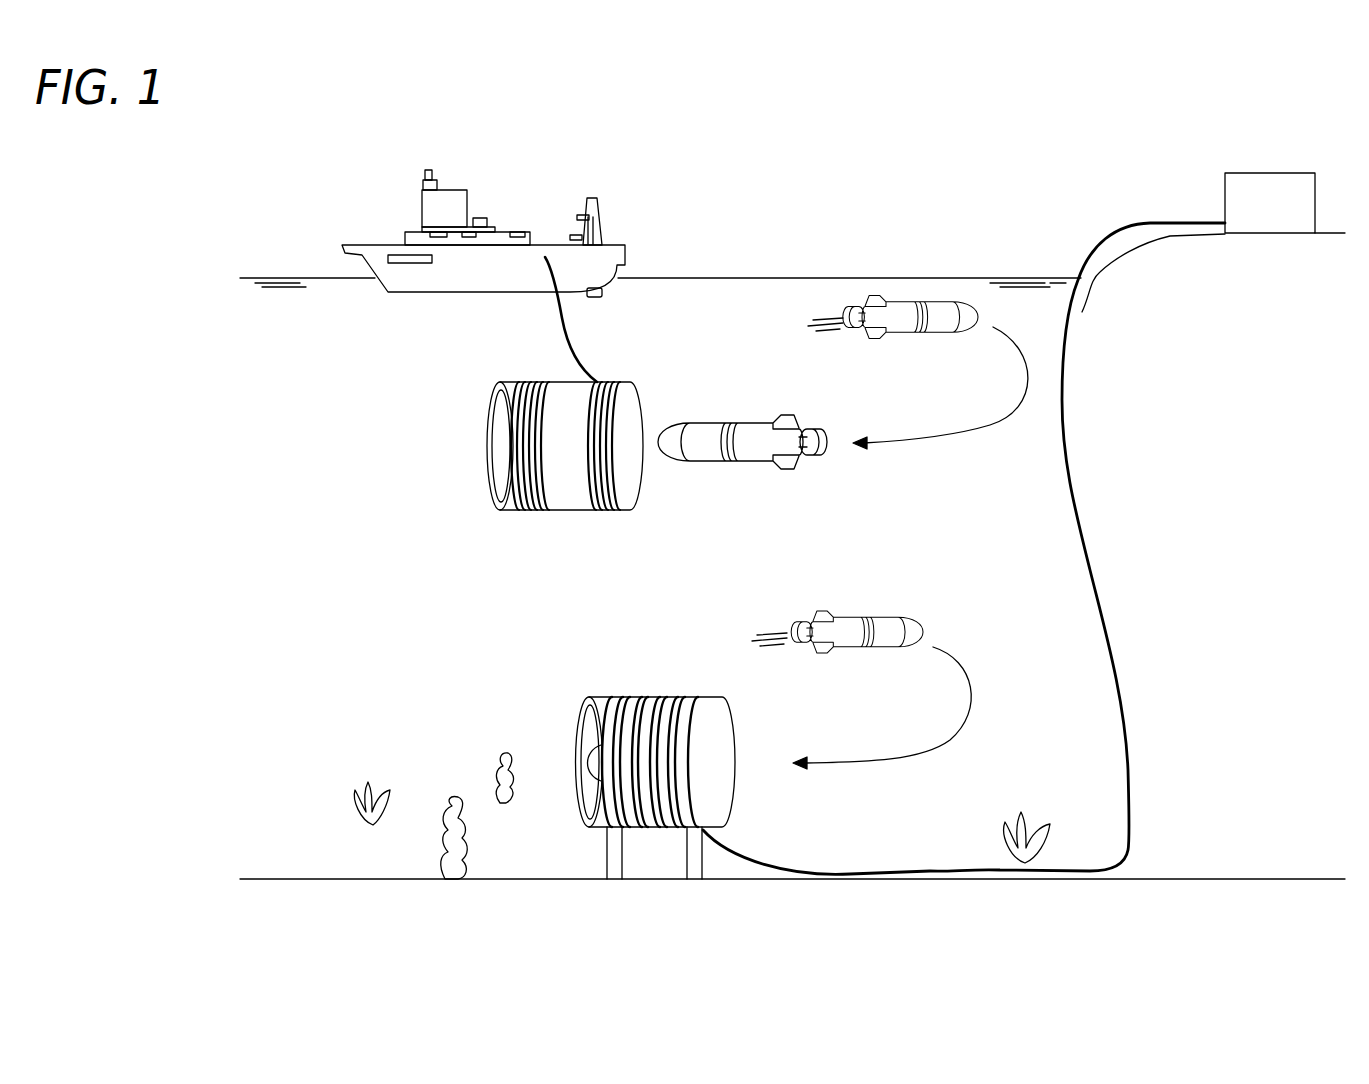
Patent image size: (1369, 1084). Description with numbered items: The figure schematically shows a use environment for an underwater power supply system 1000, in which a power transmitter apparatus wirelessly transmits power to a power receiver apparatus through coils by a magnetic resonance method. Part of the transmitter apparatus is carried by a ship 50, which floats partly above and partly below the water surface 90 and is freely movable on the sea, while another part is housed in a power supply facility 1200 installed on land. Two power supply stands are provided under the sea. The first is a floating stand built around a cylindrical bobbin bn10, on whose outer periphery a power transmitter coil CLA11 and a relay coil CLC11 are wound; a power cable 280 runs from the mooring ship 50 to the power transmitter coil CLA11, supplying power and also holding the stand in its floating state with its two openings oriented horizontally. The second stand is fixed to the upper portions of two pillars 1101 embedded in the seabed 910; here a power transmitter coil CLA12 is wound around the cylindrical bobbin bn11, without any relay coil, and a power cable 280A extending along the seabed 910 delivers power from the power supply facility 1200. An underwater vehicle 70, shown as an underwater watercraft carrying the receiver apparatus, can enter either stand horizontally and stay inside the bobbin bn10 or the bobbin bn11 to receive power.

The underwater power supply system 1000 is at (908, 185).
The ship 50 is at (615, 238).
The water surface 90 is at (782, 277).
The power cable 280 is at (568, 330).
The bobbin bn10 is at (548, 497).
The relay coil CLC11 is at (513, 512).
The power transmitter coil CLA11 is at (613, 510).
The underwater vehicle 70 is at (698, 423).
The bobbin bn11 is at (698, 746).
The power transmitter coil CLA12 is at (625, 697).
The pillars 1101 is at (683, 862).
The seabed 910 is at (500, 873).
The power cable 280A is at (937, 871).
The power supply facility 1200 is at (1225, 190).